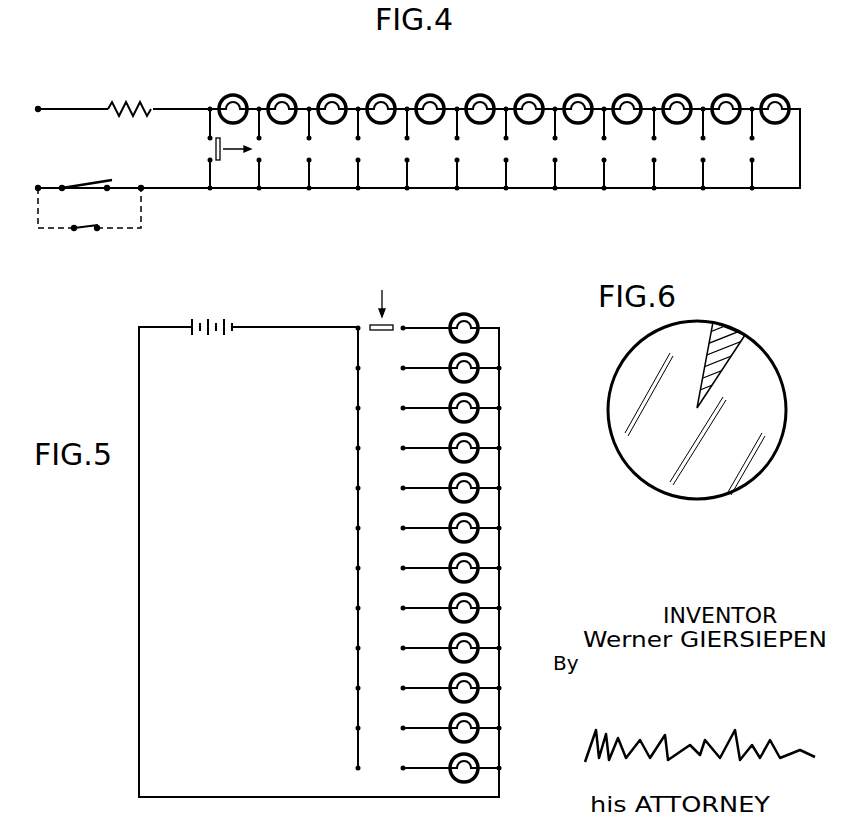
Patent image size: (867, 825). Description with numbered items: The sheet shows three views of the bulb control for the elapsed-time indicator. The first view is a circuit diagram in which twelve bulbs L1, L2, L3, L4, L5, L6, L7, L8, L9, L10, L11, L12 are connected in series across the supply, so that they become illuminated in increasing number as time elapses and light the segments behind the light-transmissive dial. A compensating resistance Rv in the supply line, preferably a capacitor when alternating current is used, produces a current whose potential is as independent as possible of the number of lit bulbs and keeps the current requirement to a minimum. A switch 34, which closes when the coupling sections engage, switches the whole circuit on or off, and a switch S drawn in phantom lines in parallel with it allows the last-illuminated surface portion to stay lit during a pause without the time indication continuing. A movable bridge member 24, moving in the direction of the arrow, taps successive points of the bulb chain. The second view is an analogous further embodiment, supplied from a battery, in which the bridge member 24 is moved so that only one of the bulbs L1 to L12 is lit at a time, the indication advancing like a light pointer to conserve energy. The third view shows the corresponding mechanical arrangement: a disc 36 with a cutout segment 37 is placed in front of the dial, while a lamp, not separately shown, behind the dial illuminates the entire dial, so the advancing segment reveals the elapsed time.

In FIG. 4, the compensating resistance Rv is at (124, 104).
In FIG. 4, the switch 34 is at (88, 183).
In FIG. 4, the switch S is at (93, 233).
In FIG. 4, the bridge member 24 is at (214, 149).
In FIG. 5, the bridge member 24 is at (372, 323).
In FIG. 4, the bulb L1 is at (224, 100).
In FIG. 5, the bulb L1 is at (451, 321).
In FIG. 4, the bulb L2 is at (273, 100).
In FIG. 5, the bulb L2 is at (478, 363).
In FIG. 4, the bulb L3 is at (323, 100).
In FIG. 5, the bulb L3 is at (451, 401).
In FIG. 4, the bulb L4 is at (372, 100).
In FIG. 5, the bulb L4 is at (478, 443).
In FIG. 4, the bulb L5 is at (421, 100).
In FIG. 5, the bulb L5 is at (451, 481).
In FIG. 4, the bulb L6 is at (471, 100).
In FIG. 5, the bulb L6 is at (478, 523).
In FIG. 4, the bulb L7 is at (520, 100).
In FIG. 5, the bulb L7 is at (451, 561).
In FIG. 4, the bulb L8 is at (569, 100).
In FIG. 5, the bulb L8 is at (478, 603).
In FIG. 4, the bulb L9 is at (618, 100).
In FIG. 5, the bulb L9 is at (451, 641).
In FIG. 4, the bulb L10 is at (667, 100).
In FIG. 5, the bulb L10 is at (478, 683).
In FIG. 4, the bulb L11 is at (716, 100).
In FIG. 5, the bulb L11 is at (451, 721).
In FIG. 4, the bulb L12 is at (765, 100).
In FIG. 5, the bulb L12 is at (478, 763).
In FIG. 6, the disc 36 is at (773, 390).
In FIG. 6, the cutout segment 37 is at (736, 329).